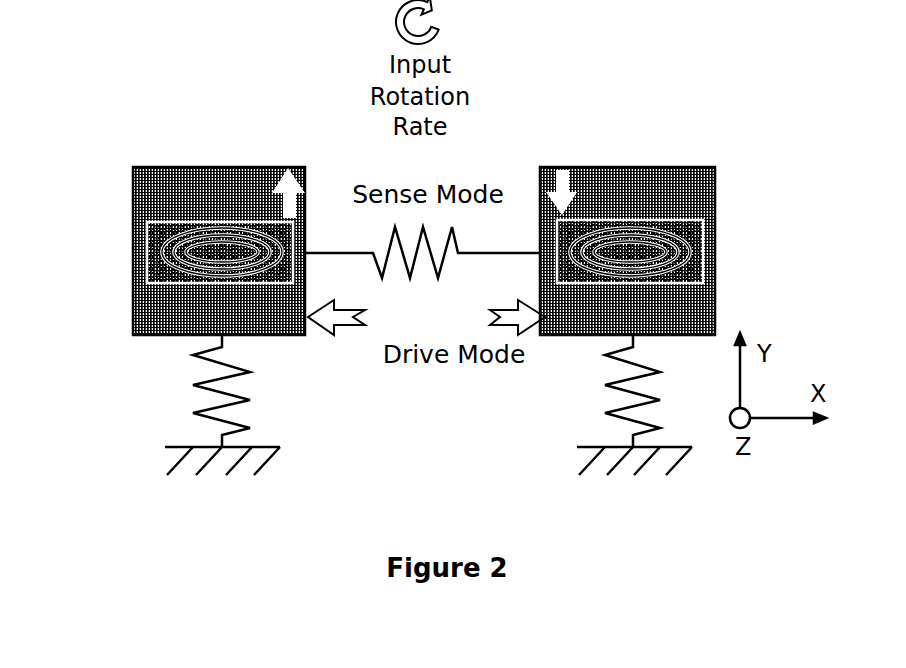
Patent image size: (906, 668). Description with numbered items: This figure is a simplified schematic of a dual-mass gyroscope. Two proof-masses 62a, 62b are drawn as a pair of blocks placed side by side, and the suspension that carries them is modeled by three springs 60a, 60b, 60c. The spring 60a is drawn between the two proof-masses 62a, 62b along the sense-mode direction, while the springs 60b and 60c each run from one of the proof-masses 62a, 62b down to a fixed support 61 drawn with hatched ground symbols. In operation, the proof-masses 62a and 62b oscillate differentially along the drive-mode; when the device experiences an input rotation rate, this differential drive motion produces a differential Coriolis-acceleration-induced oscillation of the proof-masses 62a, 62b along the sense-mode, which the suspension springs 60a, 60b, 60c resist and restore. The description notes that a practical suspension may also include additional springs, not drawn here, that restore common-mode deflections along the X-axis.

The proof-mass 62a is at (238, 180).
The proof-mass 62b is at (583, 175).
The spring 60a is at (408, 280).
The spring 60b is at (197, 387).
The spring 60c is at (605, 387).
The anchor / substrate ground 61 is at (197, 473).